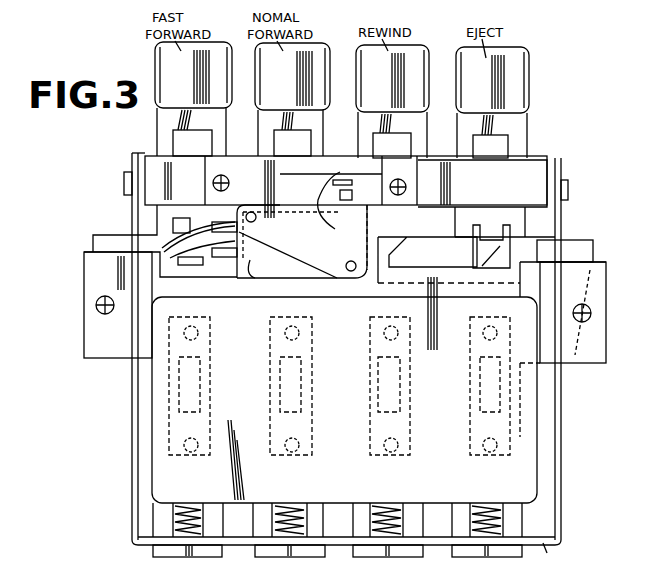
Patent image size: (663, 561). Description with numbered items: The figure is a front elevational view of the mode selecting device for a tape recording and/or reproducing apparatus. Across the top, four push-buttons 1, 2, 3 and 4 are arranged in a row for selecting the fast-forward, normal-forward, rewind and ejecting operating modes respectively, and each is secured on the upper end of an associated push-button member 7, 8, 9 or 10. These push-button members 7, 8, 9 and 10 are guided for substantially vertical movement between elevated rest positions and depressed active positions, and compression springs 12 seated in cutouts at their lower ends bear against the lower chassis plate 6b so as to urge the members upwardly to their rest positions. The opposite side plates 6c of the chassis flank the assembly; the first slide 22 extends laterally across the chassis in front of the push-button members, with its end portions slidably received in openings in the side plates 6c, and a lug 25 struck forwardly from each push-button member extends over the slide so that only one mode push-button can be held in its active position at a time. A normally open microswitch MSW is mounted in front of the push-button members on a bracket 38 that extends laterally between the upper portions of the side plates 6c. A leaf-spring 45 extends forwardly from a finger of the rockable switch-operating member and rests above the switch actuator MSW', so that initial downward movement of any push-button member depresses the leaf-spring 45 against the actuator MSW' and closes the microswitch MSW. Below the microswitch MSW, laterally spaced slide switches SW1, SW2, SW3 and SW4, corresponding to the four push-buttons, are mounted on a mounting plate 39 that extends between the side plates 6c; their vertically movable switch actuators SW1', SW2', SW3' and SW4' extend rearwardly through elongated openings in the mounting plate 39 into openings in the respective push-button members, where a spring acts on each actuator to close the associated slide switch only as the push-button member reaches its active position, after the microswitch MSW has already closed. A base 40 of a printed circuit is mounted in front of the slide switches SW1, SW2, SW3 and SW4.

The push-button 1 is at (214, 50).
The push-button 2 is at (316, 52).
The push-button 3 is at (418, 55).
The push-button 4 is at (520, 58).
The push-button member 7 is at (217, 119).
The push-button member 8 is at (317, 121).
The push-button member 9 is at (420, 124).
The push-button member 10 is at (516, 126).
The bracket 38 is at (545, 174).
The lug 25 is at (494, 232).
The first slide 22 is at (593, 246).
The mounting plate 39 is at (607, 288).
The leaf-spring 45 is at (336, 190).
The microswitch MSW is at (302, 241).
The switch actuator MSW' is at (276, 268).
The base 40 is at (530, 457).
The side plate 6c is at (132, 427).
The lower plate 6b is at (552, 552).
The slide switch SW1 is at (189, 468).
The slide switch SW2 is at (292, 468).
The slide switch SW3 is at (389, 468).
The slide switch SW4 is at (494, 468).
The switch actuator SW1' is at (213, 386).
The switch actuator SW2' is at (314, 386).
The switch actuator SW3' is at (413, 386).
The switch actuator SW4' is at (539, 386).
The compression spring 12 is at (270, 523).